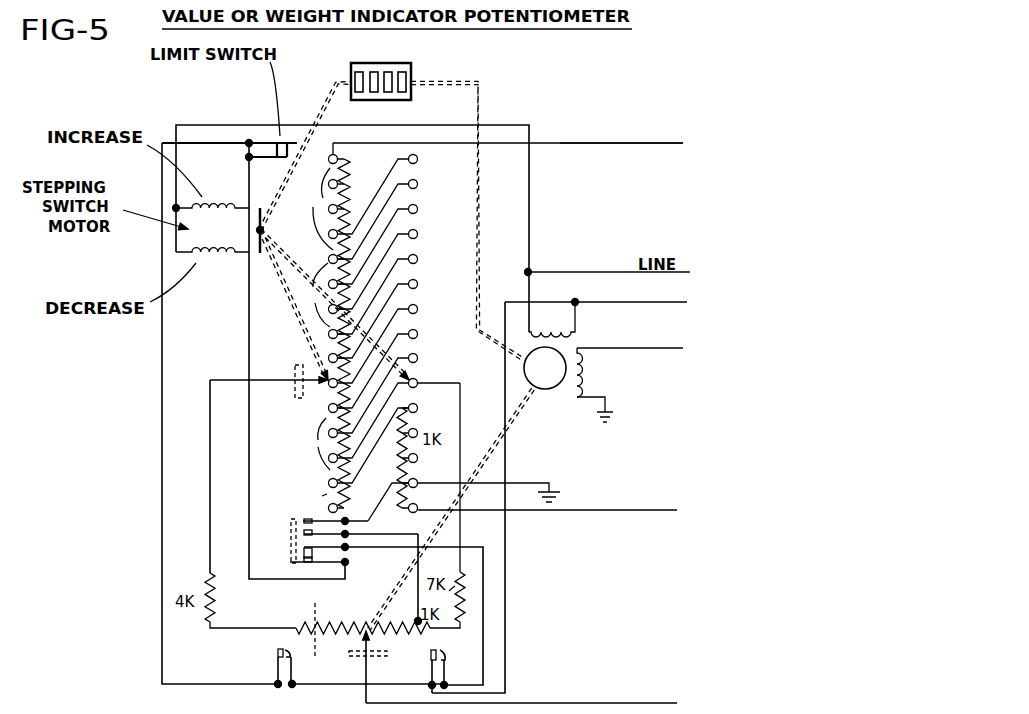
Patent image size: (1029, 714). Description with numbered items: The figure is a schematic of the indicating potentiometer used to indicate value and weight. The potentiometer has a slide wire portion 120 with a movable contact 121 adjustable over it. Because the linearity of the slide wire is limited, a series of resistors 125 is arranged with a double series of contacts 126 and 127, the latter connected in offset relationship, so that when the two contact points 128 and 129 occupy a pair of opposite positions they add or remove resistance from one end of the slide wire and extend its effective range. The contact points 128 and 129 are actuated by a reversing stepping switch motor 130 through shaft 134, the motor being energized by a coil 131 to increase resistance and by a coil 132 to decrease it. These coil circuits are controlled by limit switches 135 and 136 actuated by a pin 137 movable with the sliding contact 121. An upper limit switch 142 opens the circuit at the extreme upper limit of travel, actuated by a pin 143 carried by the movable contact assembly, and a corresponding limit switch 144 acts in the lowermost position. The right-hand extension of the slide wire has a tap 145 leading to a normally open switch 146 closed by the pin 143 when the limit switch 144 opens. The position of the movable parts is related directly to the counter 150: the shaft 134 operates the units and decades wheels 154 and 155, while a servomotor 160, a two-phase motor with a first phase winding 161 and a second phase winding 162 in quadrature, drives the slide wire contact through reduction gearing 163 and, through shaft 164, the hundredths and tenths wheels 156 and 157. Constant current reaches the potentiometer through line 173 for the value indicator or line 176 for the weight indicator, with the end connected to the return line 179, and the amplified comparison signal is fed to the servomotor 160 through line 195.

The slide wire portion 120 is at (338, 637).
The movable contact 121 is at (360, 643).
The series of resistors 125 is at (332, 474).
The first series of contacts 126 is at (328, 356).
The second series of contacts 127 is at (417, 335).
The contact point 128 is at (318, 397).
The contact point 129 is at (418, 378).
The reversing stepping switch motor 130 is at (266, 228).
The increase coil 131 is at (222, 202).
The decrease coil 132 is at (215, 262).
The shaft 134 is at (318, 115).
The limit switch 135 is at (268, 668).
The limit switch 136 is at (460, 658).
The pin 137 is at (388, 653).
The upper limit switch 142 is at (263, 137).
The pin 143 is at (293, 369).
The limit switch 144 is at (302, 568).
The tap 145 is at (412, 594).
The normally open switch 146 is at (292, 522).
The counter 150 is at (411, 72).
The units wheel 154 is at (369, 74).
The decades wheel 155 is at (357, 92).
The counter wheel 156 is at (401, 74).
The counter wheel 157 is at (390, 92).
The servomotor 160 is at (548, 390).
The first phase winding 161 is at (592, 374).
The second phase winding 162 is at (575, 312).
The reduction gearing 163 is at (512, 425).
The shaft 164 is at (480, 90).
The line 173 is at (644, 132).
The line 176 is at (644, 132).
The return line 179 is at (620, 513).
The line 195 is at (675, 350).